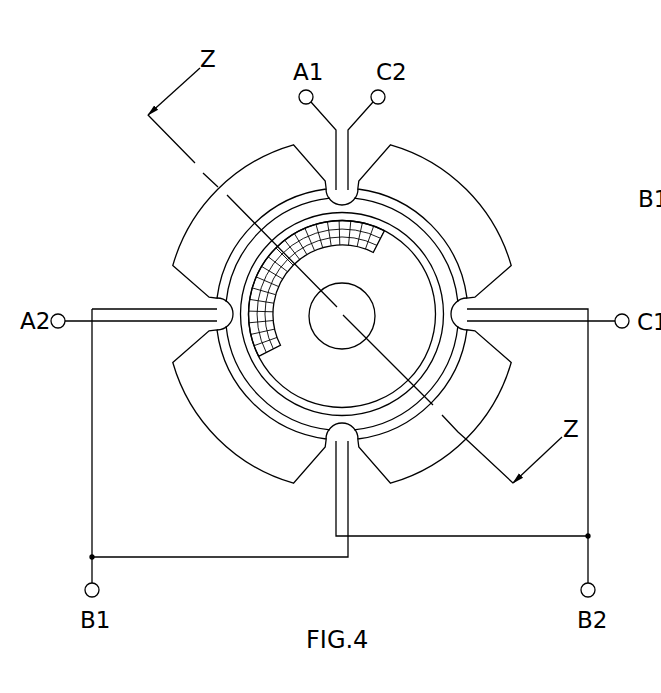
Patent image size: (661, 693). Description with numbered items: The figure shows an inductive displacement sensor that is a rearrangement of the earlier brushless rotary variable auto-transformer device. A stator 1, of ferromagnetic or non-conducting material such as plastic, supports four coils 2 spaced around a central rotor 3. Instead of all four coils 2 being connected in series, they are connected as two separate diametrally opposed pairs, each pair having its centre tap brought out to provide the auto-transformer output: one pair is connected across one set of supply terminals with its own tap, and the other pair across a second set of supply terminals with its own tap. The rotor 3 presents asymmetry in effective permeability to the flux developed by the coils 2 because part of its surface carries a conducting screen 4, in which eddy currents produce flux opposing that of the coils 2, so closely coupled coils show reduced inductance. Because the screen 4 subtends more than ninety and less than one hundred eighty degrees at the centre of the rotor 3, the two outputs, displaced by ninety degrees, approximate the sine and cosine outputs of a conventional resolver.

The stator 1 is at (333, 317).
The coils 2 is at (268, 203).
The rotor 3 is at (293, 283).
The conducting screen 4 is at (258, 346).